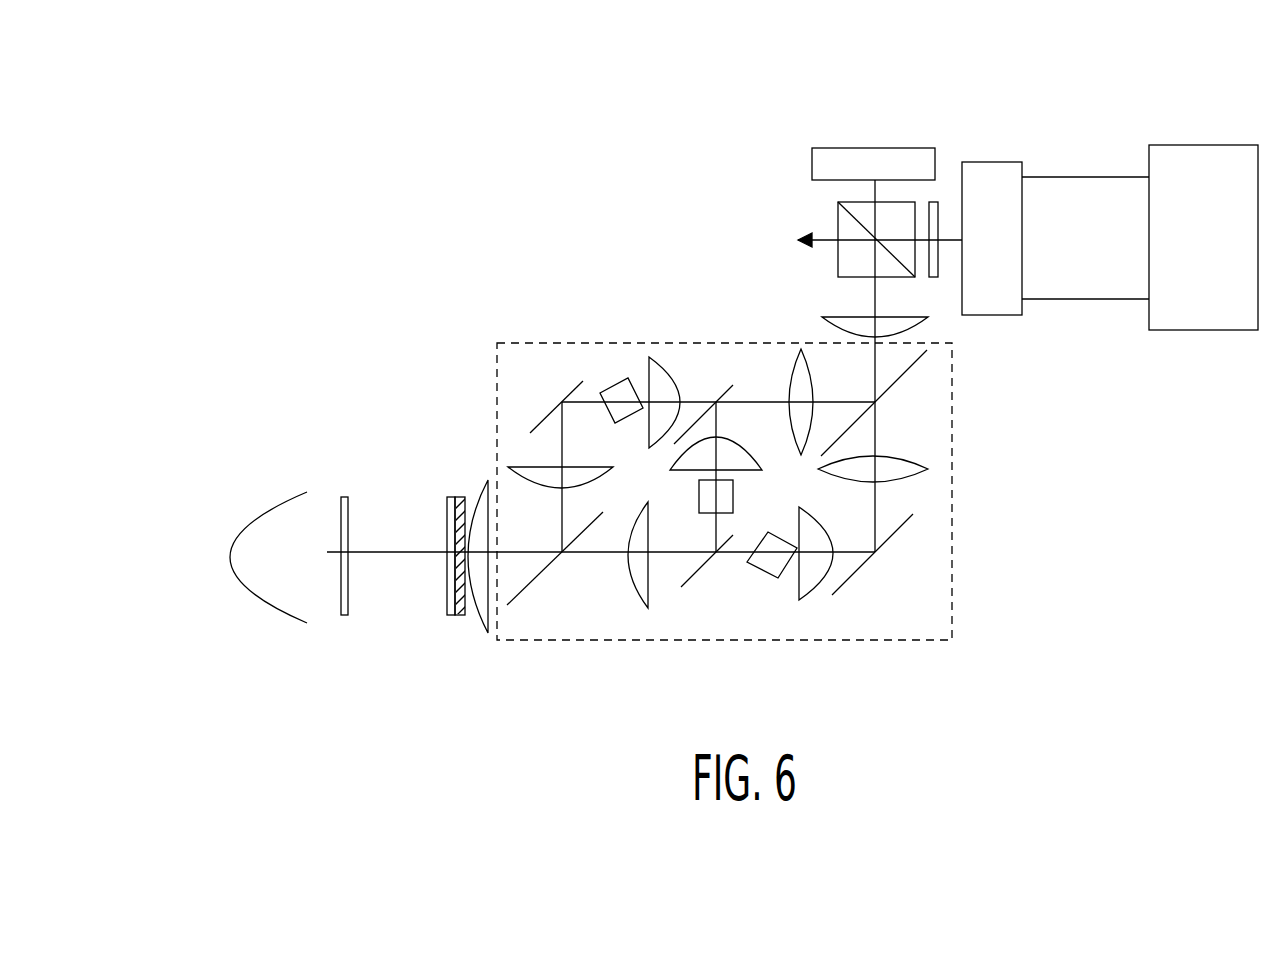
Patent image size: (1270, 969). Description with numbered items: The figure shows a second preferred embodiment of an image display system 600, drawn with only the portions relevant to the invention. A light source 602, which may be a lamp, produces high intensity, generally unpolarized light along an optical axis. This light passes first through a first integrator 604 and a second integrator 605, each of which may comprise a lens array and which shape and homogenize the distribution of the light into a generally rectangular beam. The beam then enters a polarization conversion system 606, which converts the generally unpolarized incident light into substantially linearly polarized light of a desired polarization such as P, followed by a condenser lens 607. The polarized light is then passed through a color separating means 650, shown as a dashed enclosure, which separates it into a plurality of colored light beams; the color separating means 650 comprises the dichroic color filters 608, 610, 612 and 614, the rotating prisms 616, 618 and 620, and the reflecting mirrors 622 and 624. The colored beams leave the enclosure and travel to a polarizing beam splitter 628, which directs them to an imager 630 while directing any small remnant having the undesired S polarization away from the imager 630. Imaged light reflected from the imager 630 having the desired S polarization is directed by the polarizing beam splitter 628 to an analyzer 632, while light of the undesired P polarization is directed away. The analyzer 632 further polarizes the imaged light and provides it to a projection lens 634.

The image display system 600 is at (333, 140).
The light source 602 is at (232, 545).
The first integrator 604 is at (339, 495).
The second integrator 605 is at (450, 495).
The polarization conversion system 606 is at (460, 495).
The condenser lens 607 is at (478, 627).
The dichroic color filter 608 is at (557, 557).
The dichroic color filter 610 is at (707, 560).
The dichroic color filter 612 is at (731, 374).
The dichroic color filter 614 is at (900, 379).
The rotating prism 616 is at (603, 410).
The rotating prism 618 is at (695, 497).
The rotating prism 620 is at (768, 530).
The reflecting mirror 622 is at (550, 412).
The reflecting mirror 624 is at (893, 538).
The polarizing beam splitter 628 is at (838, 208).
The imager 630 is at (917, 148).
The analyzer 632 is at (940, 202).
The projection lens 634 is at (995, 316).
The color separating means 650 is at (953, 543).